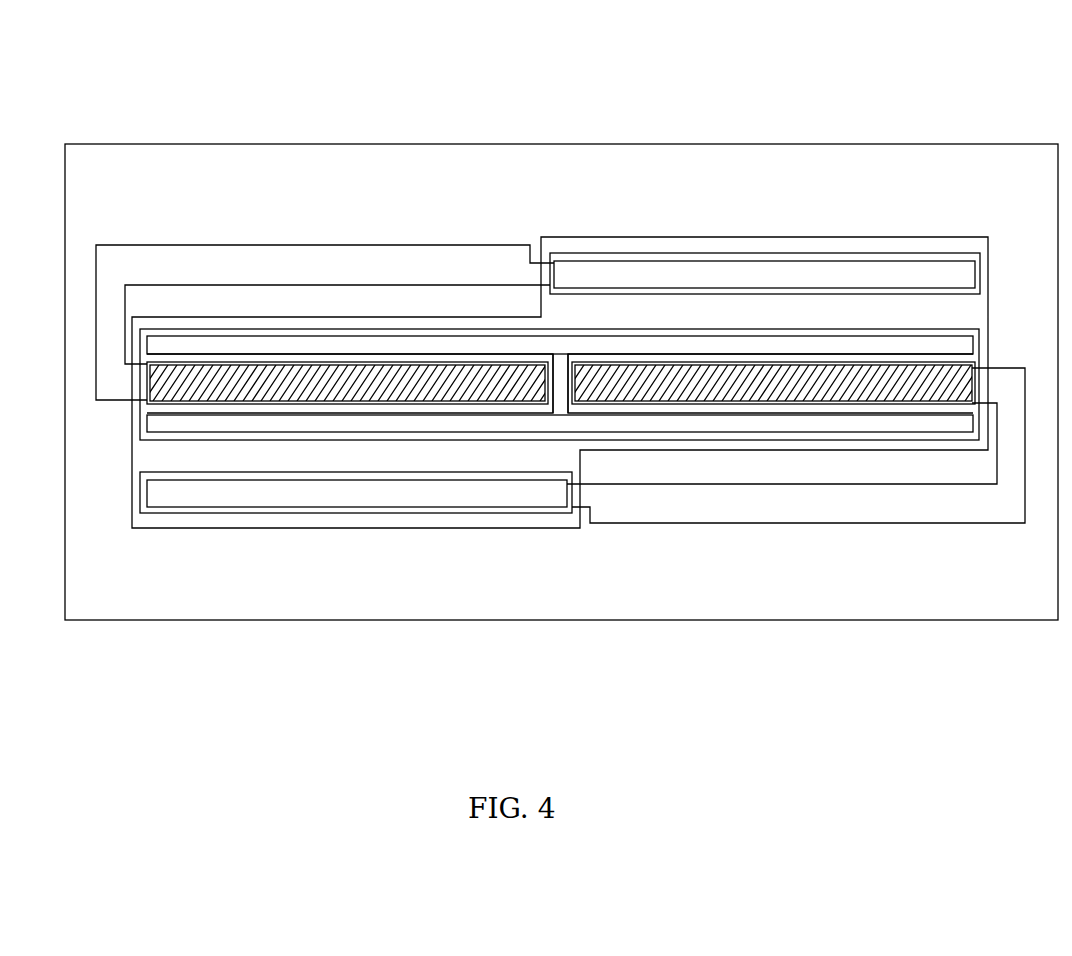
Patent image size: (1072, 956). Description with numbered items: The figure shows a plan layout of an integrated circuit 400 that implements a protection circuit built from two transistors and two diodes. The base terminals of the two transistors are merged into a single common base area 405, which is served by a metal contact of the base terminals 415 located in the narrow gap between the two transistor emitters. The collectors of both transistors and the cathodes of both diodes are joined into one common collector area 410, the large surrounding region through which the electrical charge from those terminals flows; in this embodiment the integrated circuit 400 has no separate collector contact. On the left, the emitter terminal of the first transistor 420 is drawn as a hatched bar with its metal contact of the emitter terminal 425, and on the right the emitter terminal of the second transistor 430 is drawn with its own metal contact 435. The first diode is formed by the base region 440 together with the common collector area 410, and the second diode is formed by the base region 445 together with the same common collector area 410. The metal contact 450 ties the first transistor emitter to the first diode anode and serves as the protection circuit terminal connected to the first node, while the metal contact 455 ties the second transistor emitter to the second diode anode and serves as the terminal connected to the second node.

The integrated circuit 400 is at (886, 158).
The common base area 405 is at (150, 410).
The common collector area 410 is at (970, 317).
The metal contact of the base terminals 415 is at (562, 412).
The emitter terminal of first transistor 420 is at (289, 377).
The metal contact of the emitter terminal of first transistor 425 is at (368, 380).
The emitter terminal of second transistor 430 is at (638, 385).
The metal contact of the emitter terminal of second transistor 435 is at (735, 390).
The base region of first diode 440 is at (780, 245).
The base region of second diode 445 is at (358, 512).
The metal contact of first transistor emitter and first diode anode 450 is at (410, 245).
The metal contact of second transistor emitter and second diode anode 455 is at (730, 500).